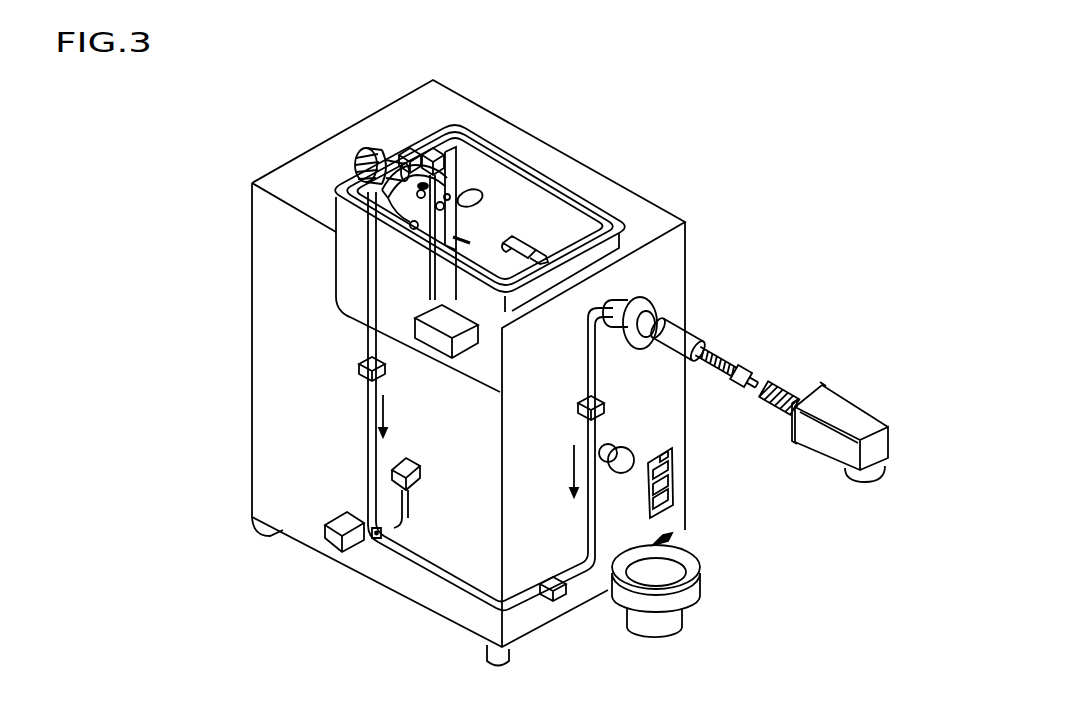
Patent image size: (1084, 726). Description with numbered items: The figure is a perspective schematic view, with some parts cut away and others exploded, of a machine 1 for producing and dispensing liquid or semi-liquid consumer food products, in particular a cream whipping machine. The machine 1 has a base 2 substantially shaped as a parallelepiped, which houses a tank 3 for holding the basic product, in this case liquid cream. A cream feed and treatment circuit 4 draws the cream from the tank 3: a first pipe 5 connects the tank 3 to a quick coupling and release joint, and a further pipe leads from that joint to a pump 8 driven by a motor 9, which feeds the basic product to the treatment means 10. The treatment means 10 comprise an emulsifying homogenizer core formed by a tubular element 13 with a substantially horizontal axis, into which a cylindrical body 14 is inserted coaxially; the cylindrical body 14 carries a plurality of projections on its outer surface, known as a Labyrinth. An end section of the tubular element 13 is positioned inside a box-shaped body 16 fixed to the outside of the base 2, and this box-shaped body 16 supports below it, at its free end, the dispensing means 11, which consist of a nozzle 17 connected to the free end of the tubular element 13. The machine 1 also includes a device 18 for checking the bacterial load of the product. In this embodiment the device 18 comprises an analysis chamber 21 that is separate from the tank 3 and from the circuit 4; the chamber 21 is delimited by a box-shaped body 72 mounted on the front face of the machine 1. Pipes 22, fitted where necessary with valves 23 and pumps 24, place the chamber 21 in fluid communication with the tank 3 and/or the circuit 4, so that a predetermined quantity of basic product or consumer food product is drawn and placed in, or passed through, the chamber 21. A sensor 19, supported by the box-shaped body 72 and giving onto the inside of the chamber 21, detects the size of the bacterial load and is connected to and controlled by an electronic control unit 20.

The machine 1 is at (290, 137).
The base 2 is at (405, 600).
The tank 3 is at (530, 163).
The cream feed and treatment circuit 4 is at (455, 148).
The first pipe 5 is at (468, 157).
The pump 8 is at (398, 147).
The motor 9 is at (353, 163).
The treatment means 10 is at (716, 346).
The dispensing means 11 is at (857, 472).
The tubular element 13 is at (535, 248).
The cylindrical body 14 is at (735, 365).
The box-shaped body 16 is at (847, 397).
The nozzle 17 is at (885, 470).
The device for checking the bacterial load 18 is at (337, 475).
The sensor 19 is at (377, 540).
The electronic control unit 20 is at (390, 476).
The analysis chamber 21 is at (330, 537).
The pipes 22 is at (368, 410).
The valves 23 is at (431, 146).
The pumps 24 is at (360, 367).
The box-shaped body 72 is at (414, 308).